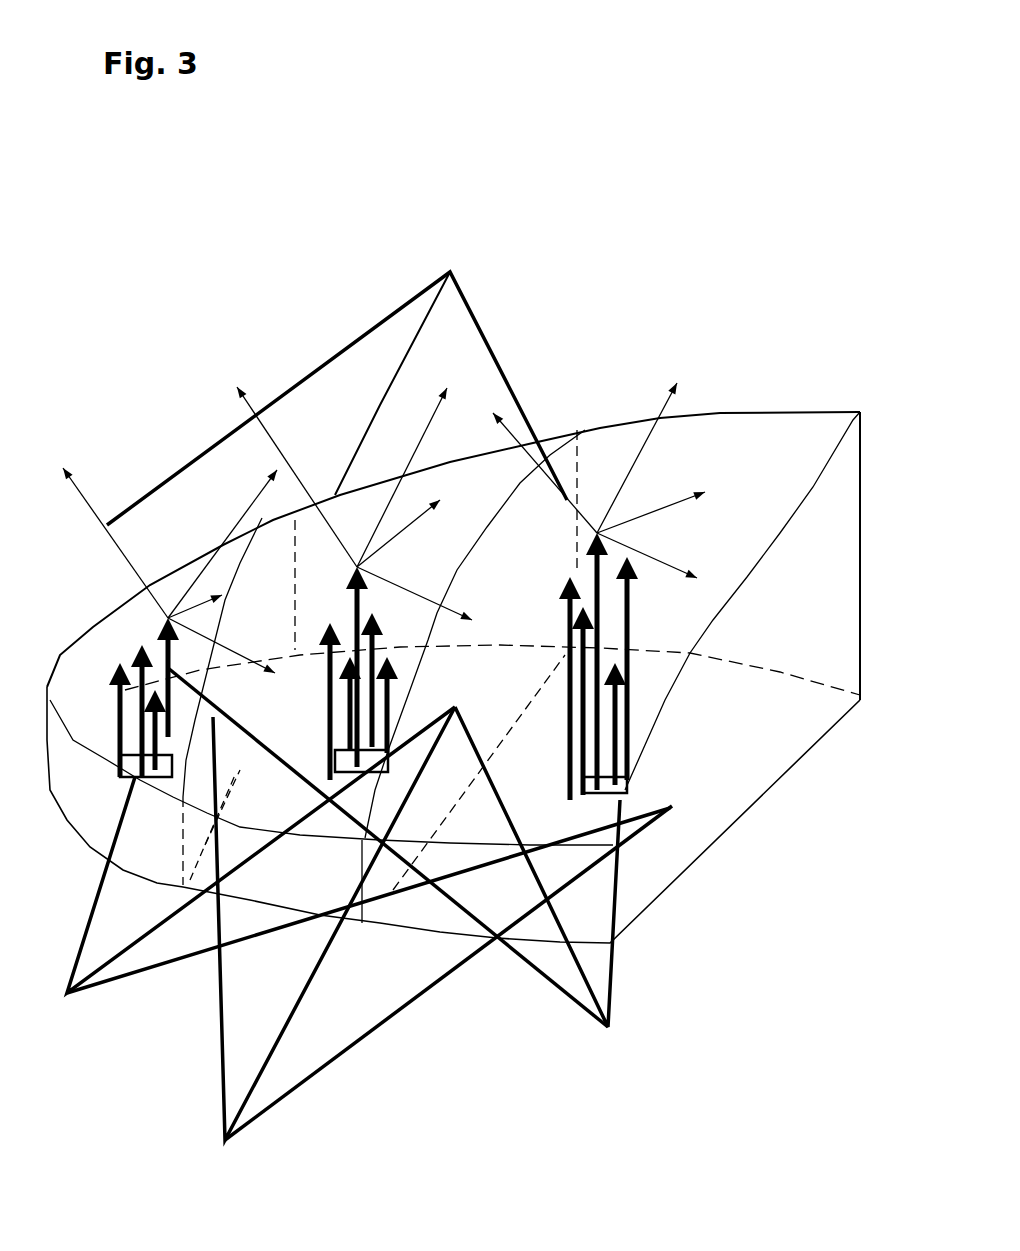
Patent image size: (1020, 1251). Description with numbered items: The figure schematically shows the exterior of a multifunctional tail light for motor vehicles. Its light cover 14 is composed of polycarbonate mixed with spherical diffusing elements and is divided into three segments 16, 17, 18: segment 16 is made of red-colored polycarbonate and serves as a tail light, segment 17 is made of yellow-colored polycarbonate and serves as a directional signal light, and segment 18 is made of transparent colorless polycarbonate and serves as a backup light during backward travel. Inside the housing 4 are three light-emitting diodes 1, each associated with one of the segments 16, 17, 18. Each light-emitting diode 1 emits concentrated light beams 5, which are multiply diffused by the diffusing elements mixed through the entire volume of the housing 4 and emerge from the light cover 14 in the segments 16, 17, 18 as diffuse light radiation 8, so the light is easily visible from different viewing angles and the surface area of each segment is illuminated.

The light-emitting diode 1 is at (362, 870).
The housing 4 is at (441, 946).
The concentrated light beams 5 is at (394, 868).
The diffuse light radiation 8 is at (337, 377).
The light cover 14 is at (680, 615).
The segment 16 is at (187, 580).
The segment 17 is at (402, 493).
The segment 18 is at (673, 455).